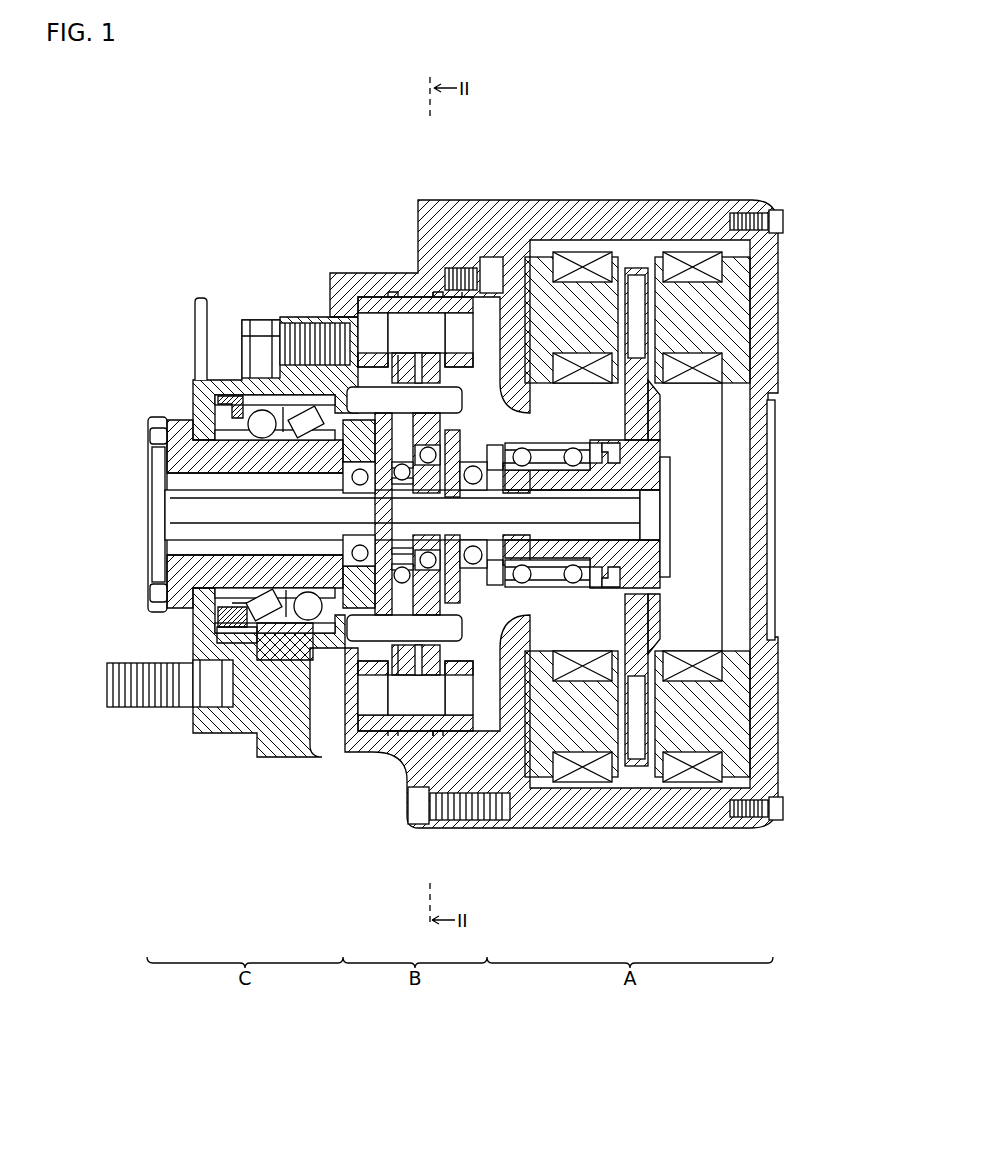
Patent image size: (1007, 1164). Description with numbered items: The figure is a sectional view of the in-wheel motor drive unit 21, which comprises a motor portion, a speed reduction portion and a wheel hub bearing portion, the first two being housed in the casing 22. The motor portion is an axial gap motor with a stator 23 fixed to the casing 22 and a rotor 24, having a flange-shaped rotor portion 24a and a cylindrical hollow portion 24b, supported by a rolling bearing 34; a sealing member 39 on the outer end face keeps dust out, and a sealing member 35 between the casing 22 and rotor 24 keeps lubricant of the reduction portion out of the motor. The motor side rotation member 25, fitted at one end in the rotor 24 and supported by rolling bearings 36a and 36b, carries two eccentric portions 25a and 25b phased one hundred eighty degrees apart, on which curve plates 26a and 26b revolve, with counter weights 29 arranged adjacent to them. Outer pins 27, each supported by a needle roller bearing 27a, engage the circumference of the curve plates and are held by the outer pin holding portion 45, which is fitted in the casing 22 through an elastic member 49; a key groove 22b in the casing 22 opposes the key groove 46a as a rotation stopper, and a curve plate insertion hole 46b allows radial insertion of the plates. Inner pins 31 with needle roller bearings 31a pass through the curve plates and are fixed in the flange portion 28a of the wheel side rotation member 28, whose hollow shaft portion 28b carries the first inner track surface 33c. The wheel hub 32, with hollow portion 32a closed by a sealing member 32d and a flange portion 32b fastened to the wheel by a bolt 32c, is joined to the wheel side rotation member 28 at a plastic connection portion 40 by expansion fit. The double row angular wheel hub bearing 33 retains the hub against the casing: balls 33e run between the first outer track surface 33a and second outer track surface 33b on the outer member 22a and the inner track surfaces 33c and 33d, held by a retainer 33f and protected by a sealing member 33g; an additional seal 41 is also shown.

The in-wheel motor drive unit 21 is at (176, 165).
The casing 22 is at (668, 212).
The outer member 22a is at (296, 322).
The key groove 22b is at (462, 292).
The stator 23 is at (730, 318).
The rotor 24 is at (677, 587).
The rotor portion 24a is at (637, 770).
The hollow portion 24b is at (650, 510).
The motor side rotation member 25 is at (625, 518).
The eccentric portion 25a is at (250, 498).
The eccentric portion 25b is at (300, 522).
The curve plate 26a is at (440, 720).
The curve plate 26b is at (383, 413).
The outer pin 27 is at (415, 326).
The needle roller bearing 27a is at (398, 356).
The wheel side rotation member 28 is at (175, 462).
The flange portion 28a is at (345, 590).
The shaft portion 28b is at (190, 545).
The counter weight 29 is at (350, 388).
The inner pin 31 is at (505, 445).
The needle roller bearing 31a is at (433, 292).
The wheel hub 32 is at (181, 409).
The hollow portion 32a is at (150, 590).
The flange portion 32b is at (196, 302).
The bolt 32c is at (127, 709).
The sealing member 32d is at (157, 565).
The wheel hub bearing 33 is at (231, 380).
The first outer track surface 33a is at (274, 382).
The second outer track surface 33b is at (255, 395).
The first inner track surface 33c is at (272, 616).
The second inner track surface 33d is at (262, 640).
The ball 33e is at (306, 622).
The retainer 33f is at (235, 632).
The sealing member 33g is at (218, 400).
The rolling bearing 34 is at (596, 443).
The sealing member 35 is at (620, 450).
The rolling bearing 36a is at (540, 443).
The rolling bearing 36b is at (355, 476).
The sealing member 39 is at (768, 430).
The plastic connection portion 40 is at (150, 440).
The oil seal 41 is at (300, 578).
The outer pin holding portion 45 is at (432, 700).
The key groove 46a is at (492, 258).
The curve plate insertion hole 46b is at (418, 824).
The elastic member 49 is at (418, 735).